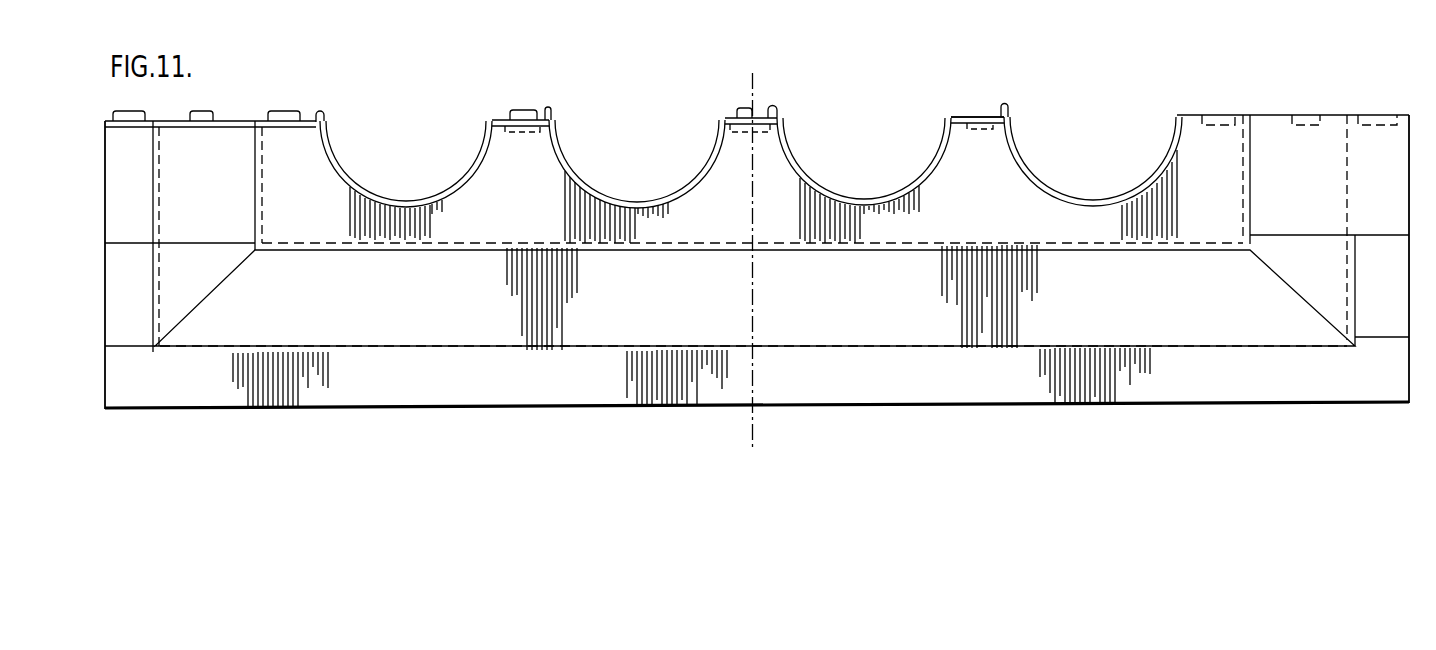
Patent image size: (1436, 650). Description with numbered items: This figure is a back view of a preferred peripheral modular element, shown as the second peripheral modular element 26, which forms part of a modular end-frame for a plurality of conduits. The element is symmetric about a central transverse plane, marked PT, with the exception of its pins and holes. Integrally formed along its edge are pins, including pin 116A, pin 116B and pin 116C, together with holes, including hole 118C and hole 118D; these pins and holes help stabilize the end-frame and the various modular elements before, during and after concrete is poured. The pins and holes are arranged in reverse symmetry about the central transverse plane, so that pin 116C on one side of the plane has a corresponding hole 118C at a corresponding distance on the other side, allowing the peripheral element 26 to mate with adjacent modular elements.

The pin 116A is at (291, 112).
The pin 116B is at (523, 110).
The pin 116C is at (743, 107).
The hole 118C is at (762, 107).
The hole 118D is at (983, 117).
The second peripheral modular element 26 is at (803, 437).